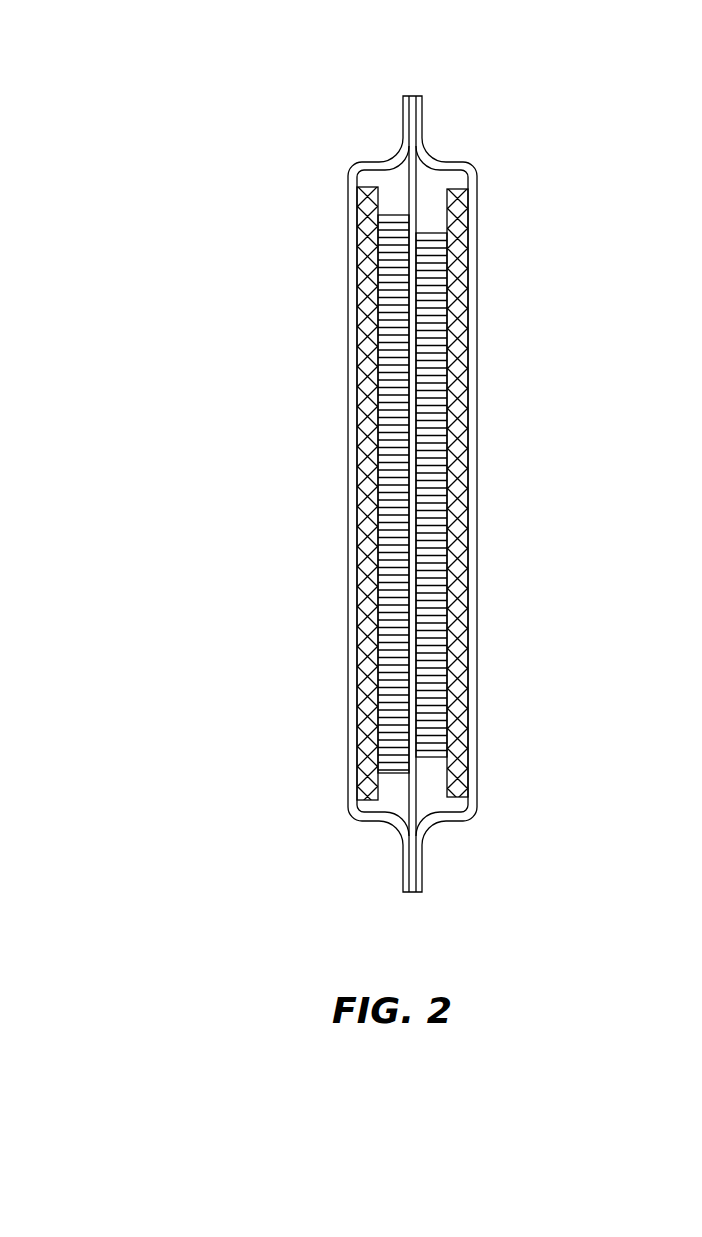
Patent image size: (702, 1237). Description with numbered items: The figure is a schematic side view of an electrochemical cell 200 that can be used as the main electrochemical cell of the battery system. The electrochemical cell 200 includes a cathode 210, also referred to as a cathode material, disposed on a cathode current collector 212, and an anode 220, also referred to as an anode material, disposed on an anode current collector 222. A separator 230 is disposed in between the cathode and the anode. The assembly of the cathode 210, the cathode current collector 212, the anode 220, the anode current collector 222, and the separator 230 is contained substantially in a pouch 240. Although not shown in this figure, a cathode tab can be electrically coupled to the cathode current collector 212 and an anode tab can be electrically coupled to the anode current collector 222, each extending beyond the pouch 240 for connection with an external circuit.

The electrochemical cell 200 is at (200, 196).
The cathode 210 is at (395, 212).
The cathode current collector 212 is at (368, 188).
The anode 220 is at (428, 230).
The anode current collector 222 is at (456, 188).
The separator 230 is at (416, 806).
The pouch 240 is at (347, 800).